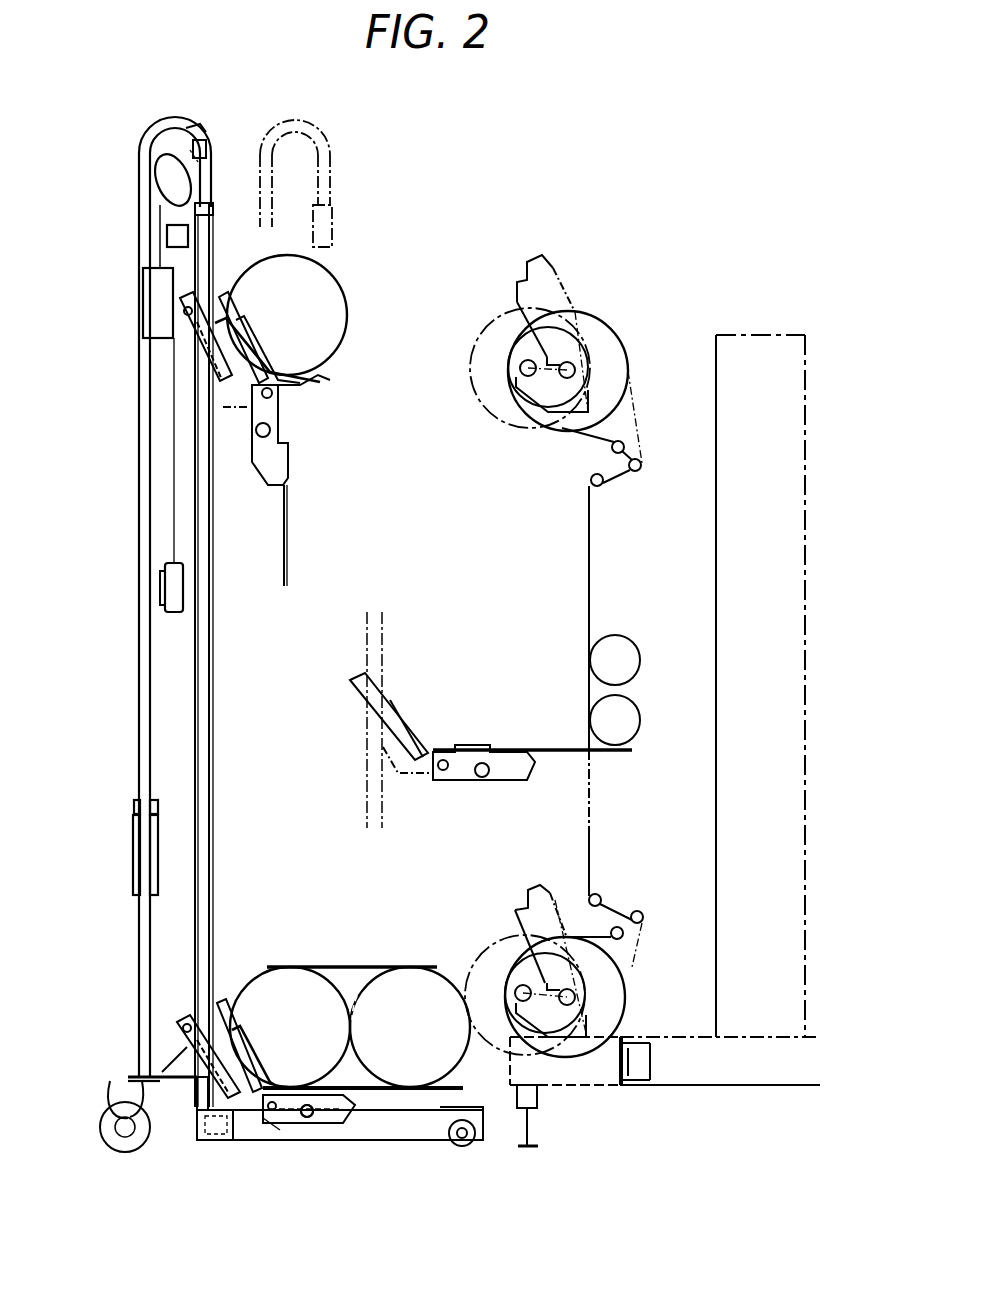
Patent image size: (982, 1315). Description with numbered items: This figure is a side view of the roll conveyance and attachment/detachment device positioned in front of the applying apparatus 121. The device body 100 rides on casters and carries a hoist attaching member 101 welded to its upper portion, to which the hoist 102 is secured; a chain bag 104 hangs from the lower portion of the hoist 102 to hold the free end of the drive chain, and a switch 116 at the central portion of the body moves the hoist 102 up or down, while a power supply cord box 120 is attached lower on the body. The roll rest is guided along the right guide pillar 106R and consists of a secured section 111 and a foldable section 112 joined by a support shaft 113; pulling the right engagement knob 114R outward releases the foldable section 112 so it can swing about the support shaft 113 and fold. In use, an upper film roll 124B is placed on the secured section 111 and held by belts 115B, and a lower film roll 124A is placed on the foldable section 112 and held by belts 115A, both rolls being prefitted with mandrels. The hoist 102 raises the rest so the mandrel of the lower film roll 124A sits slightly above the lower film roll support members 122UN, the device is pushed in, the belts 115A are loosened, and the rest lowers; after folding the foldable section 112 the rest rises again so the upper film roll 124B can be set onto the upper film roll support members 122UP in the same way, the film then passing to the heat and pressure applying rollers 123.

The device body 100 is at (139, 425).
The hoist attaching member 101 is at (202, 136).
The hoist 102 is at (172, 185).
The chain bag 104 is at (155, 290).
The right guide pillar 106R is at (212, 668).
The secured section of the roll rest 111 is at (310, 404).
The foldable section of the roll rest 112 is at (290, 476).
The support shaft 113 is at (270, 1120).
The right engagement knob 114R is at (306, 1120).
The belts for securing the lower film roll 115A is at (384, 967).
The belts for securing the upper film roll 115B is at (336, 966).
The switch 116 is at (172, 590).
The power supply cord box 120 is at (140, 868).
The machine frame 121 is at (808, 780).
The upper film roll support members 122UP is at (548, 264).
The lower film roll support members 122UN is at (540, 884).
The heat and pressure applying rollers 123 is at (640, 690).
The lower film roll 124A is at (608, 1042).
The upper film roll 124B is at (332, 282).